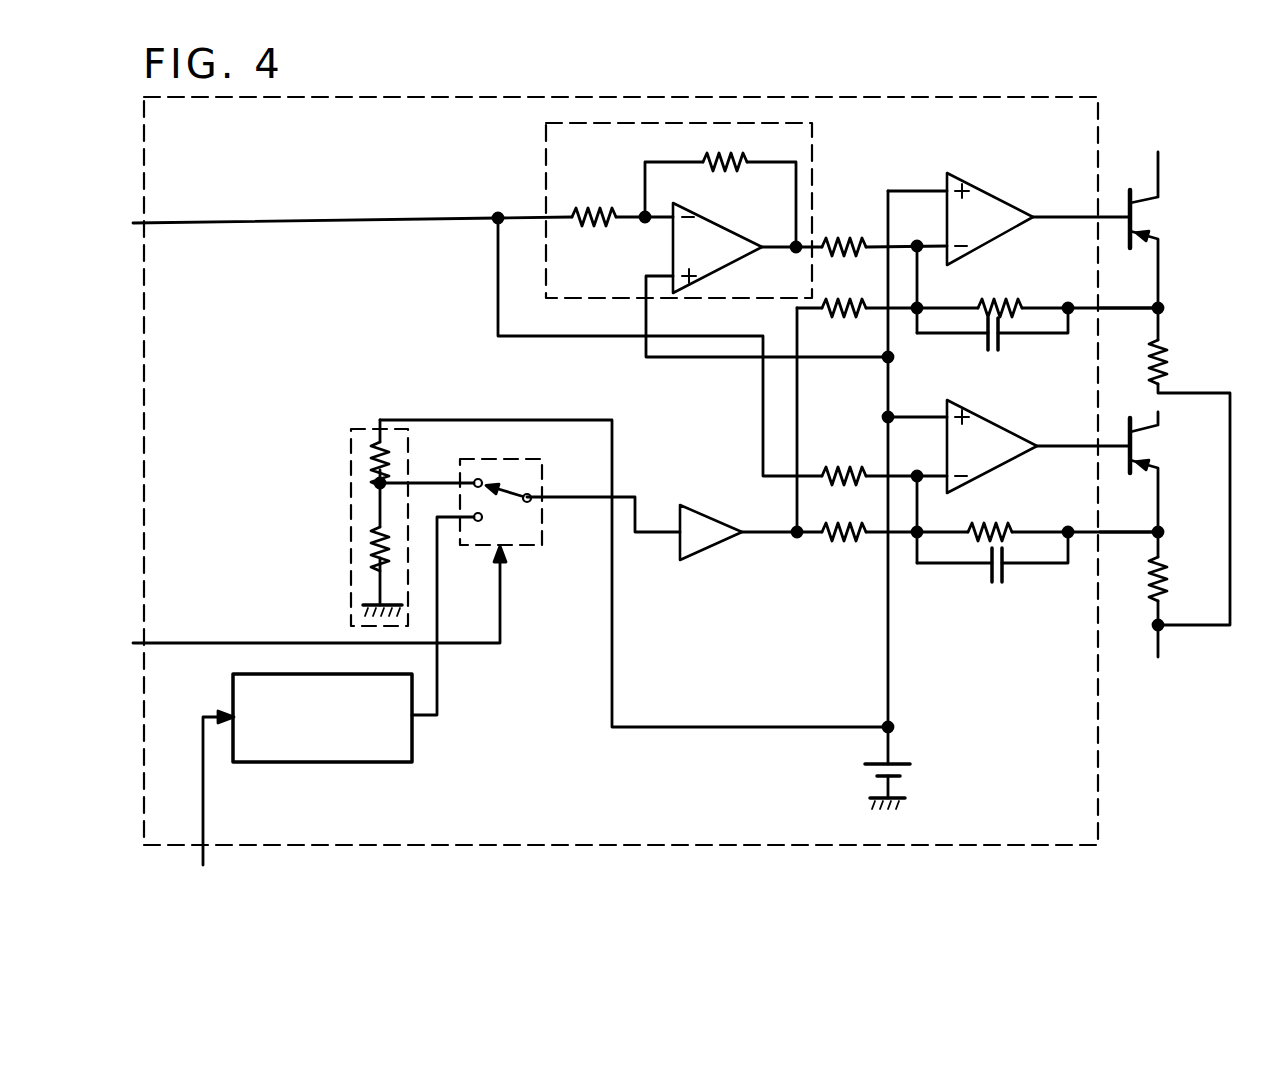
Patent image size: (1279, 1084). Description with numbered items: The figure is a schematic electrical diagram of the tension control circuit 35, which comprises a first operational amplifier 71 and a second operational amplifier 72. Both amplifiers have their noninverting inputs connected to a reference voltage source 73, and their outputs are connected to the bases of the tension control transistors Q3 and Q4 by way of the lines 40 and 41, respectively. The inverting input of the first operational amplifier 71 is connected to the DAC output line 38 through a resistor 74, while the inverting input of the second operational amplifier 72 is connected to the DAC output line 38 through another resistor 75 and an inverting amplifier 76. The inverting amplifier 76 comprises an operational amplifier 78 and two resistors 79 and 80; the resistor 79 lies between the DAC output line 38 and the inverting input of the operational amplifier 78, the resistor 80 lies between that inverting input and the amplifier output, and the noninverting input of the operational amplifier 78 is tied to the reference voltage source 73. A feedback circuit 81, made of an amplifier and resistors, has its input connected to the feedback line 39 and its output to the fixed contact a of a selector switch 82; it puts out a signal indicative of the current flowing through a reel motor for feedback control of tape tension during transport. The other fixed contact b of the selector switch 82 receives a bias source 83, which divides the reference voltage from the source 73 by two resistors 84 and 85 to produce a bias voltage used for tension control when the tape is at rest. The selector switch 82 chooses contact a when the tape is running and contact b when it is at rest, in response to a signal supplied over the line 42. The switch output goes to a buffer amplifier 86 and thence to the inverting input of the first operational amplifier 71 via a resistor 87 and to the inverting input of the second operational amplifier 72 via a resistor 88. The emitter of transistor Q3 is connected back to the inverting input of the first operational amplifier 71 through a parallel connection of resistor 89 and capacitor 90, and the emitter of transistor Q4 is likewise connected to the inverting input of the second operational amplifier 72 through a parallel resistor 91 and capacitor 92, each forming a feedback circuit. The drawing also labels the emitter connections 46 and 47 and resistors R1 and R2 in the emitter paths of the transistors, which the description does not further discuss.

The tension control circuit 35 is at (1104, 794).
The DAC output line 38 is at (197, 218).
The feedback line 39 is at (205, 800).
The line 40 is at (1115, 433).
The line 41 is at (1115, 198).
The signal line 42 is at (186, 641).
The emitter node of Q3 46 is at (1116, 530).
The emitter node of Q4 47 is at (1118, 304).
The first operational amplifier 71 is at (1011, 428).
The second operational amplifier 72 is at (1013, 197).
The reference voltage source 73 is at (898, 765).
The resistor 74 is at (838, 463).
The resistor 75 is at (845, 234).
The inverting amplifier 76 is at (545, 162).
The operational amplifier 78 is at (673, 251).
The resistor 79 is at (594, 212).
The resistor 80 is at (720, 200).
The feedback circuit 81 is at (320, 763).
The selector switch 82 is at (544, 486).
The bias source 83 is at (356, 430).
The resistor 84 is at (368, 458).
The resistor 85 is at (368, 538).
The buffer amplifier 86 is at (709, 508).
The resistor 87 is at (843, 543).
The resistor 88 is at (840, 302).
The resistor 89 is at (1008, 527).
The capacitor 90 is at (1004, 572).
The resistor 91 is at (1001, 296).
The capacitor 92 is at (1001, 340).
The first tension control transistor Q3 is at (1147, 448).
The second tension control transistor Q4 is at (1150, 210).
The resistor R1 is at (1165, 602).
The resistor R2 is at (1165, 372).